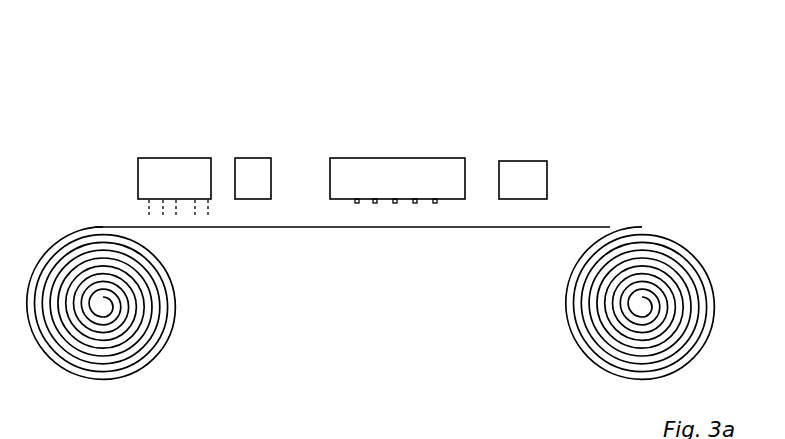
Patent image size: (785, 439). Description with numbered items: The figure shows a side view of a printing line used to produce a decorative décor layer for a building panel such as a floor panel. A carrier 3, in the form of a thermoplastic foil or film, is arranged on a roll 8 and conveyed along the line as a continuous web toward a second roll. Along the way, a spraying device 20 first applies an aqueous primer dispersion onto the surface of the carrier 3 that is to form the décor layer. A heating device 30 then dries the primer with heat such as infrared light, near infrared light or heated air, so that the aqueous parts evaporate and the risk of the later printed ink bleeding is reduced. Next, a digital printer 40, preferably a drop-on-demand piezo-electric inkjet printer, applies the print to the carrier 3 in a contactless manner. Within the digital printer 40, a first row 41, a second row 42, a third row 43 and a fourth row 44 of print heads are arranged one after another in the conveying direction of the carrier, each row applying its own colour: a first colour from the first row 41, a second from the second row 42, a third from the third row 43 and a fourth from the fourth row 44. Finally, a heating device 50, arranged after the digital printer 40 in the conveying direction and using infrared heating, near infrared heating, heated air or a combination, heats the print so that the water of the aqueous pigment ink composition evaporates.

The carrier 3 is at (610, 228).
The roll 8 is at (147, 340).
The spraying device 20 is at (173, 157).
The heating device 30 is at (261, 157).
The digital printer 40 is at (413, 148).
The first row of print heads 41 is at (373, 203).
The second row of print heads 42 is at (392, 203).
The third row of print heads 43 is at (412, 203).
The fourth row of print heads 44 is at (437, 203).
The heating device 50 is at (548, 155).